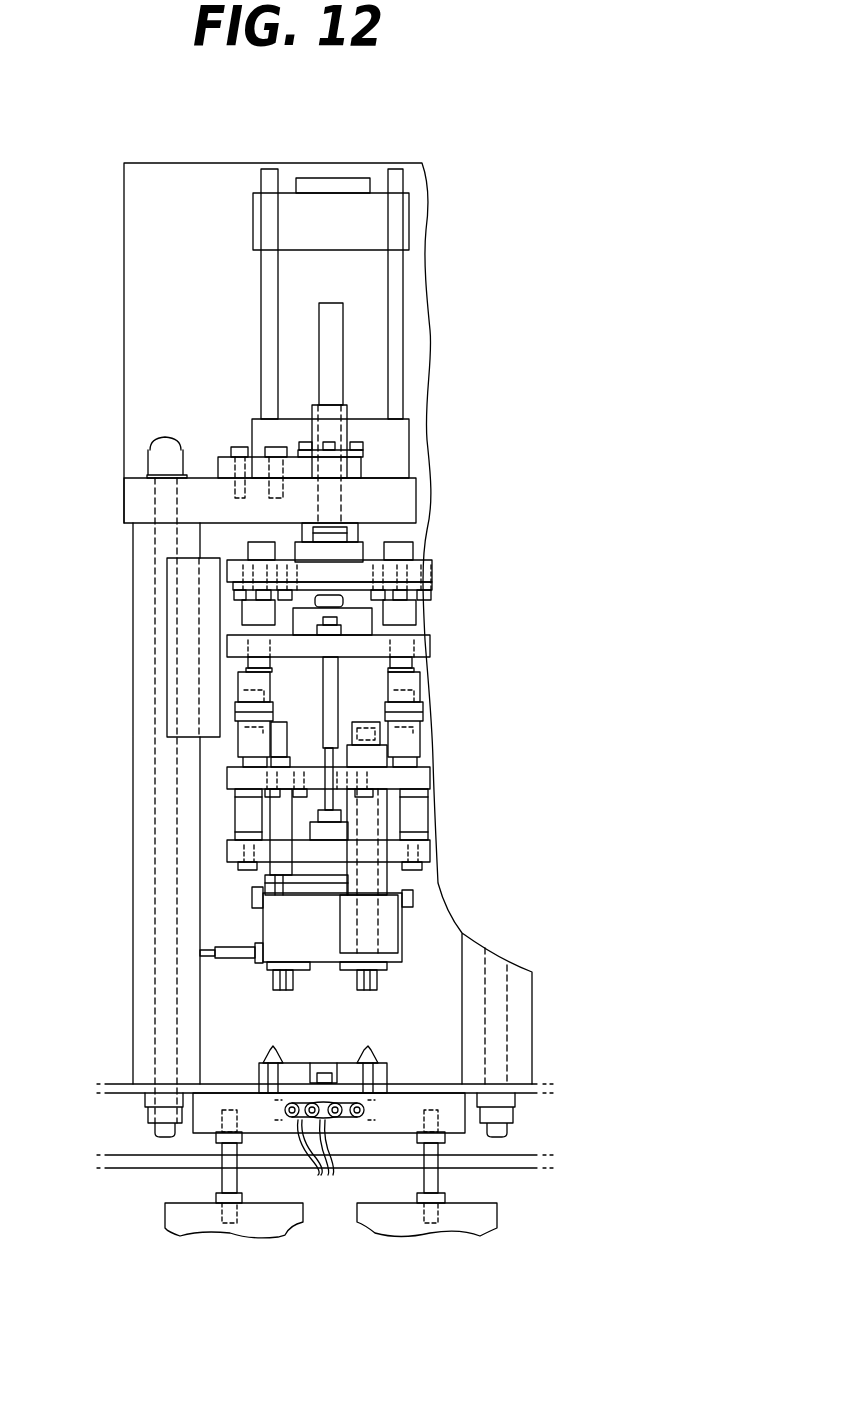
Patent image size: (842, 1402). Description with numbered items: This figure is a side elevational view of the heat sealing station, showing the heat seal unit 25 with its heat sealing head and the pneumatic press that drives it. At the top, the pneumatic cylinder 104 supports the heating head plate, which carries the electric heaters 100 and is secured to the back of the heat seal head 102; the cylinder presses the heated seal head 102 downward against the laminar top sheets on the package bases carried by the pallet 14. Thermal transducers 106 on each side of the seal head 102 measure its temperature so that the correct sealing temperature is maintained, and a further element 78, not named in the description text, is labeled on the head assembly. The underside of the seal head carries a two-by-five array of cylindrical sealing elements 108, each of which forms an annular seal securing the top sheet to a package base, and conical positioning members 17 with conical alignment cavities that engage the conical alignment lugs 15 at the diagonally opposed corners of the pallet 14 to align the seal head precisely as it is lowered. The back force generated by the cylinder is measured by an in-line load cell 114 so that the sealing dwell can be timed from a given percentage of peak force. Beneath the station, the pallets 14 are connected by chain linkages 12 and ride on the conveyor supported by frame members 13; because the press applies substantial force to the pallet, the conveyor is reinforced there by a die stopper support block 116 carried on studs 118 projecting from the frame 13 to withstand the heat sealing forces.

The heat seal unit 25 is at (468, 505).
The pneumatic cylinder 104 is at (318, 360).
The in-line load cell 114 is at (387, 623).
The electric heaters 100 is at (262, 912).
The bracket 78 is at (263, 920).
The heat seal head 102 is at (263, 933).
The thermal transducers 106 is at (225, 958).
The conical positioning members 17 is at (273, 975).
The cylindrical sealing elements 108 is at (350, 973).
The conical alignment lug 15 is at (280, 1055).
The pallet 14 is at (333, 1055).
The chain linkages 12 is at (325, 1152).
The die stopper support block 116 is at (397, 1133).
The studs 118 is at (237, 1173).
The frame members 13 is at (265, 1237).